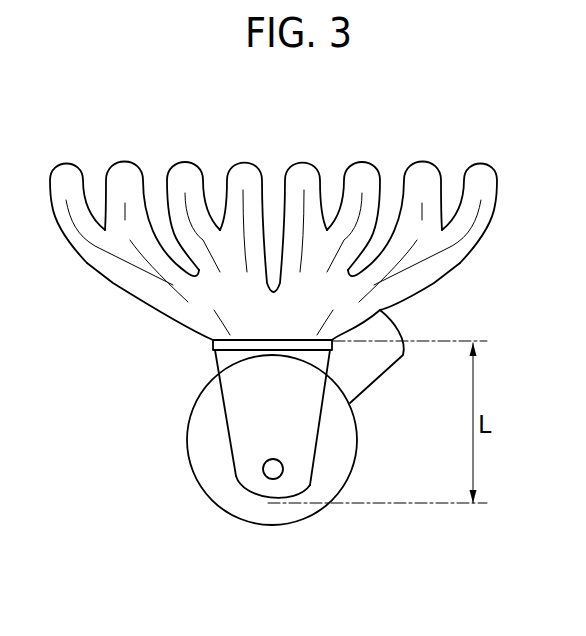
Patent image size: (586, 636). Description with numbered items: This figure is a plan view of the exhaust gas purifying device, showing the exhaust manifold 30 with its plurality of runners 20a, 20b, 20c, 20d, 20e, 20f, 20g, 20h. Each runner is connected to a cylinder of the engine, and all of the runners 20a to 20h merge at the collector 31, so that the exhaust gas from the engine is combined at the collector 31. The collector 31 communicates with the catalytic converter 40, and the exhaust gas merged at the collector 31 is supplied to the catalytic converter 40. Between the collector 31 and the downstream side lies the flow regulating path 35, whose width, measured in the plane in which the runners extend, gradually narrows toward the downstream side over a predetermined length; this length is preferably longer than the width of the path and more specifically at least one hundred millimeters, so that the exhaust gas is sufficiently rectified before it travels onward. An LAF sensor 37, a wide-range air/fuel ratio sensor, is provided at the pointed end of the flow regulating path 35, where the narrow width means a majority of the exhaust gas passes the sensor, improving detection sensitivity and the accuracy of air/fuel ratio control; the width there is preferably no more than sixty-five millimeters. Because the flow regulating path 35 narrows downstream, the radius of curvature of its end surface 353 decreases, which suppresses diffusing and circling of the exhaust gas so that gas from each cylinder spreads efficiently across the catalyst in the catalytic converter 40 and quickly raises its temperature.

The runner 20a is at (68, 175).
The runner 20b is at (125, 175).
The runner 20c is at (185, 175).
The runner 20d is at (245, 175).
The runner 20e is at (303, 177).
The runner 20f is at (362, 175).
The runner 20g is at (420, 175).
The runner 20h is at (480, 177).
The exhaust manifold 30 is at (108, 363).
The collector 31 is at (258, 317).
The flow regulating path 35 is at (258, 397).
The LAF sensor 37 is at (283, 463).
The catalytic converter 40 is at (202, 530).
The end surface 353 is at (270, 502).